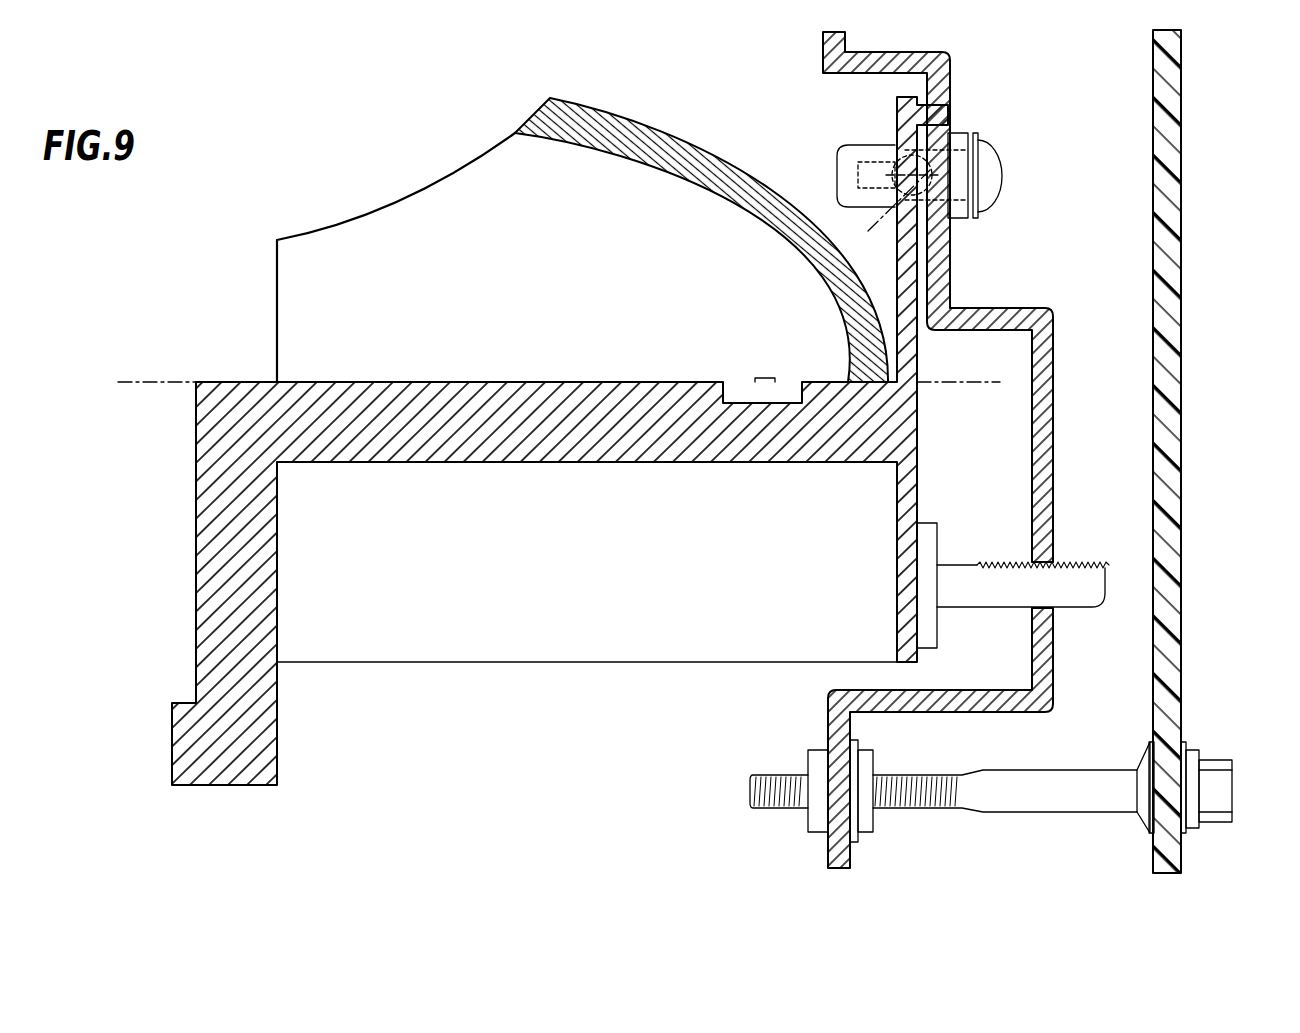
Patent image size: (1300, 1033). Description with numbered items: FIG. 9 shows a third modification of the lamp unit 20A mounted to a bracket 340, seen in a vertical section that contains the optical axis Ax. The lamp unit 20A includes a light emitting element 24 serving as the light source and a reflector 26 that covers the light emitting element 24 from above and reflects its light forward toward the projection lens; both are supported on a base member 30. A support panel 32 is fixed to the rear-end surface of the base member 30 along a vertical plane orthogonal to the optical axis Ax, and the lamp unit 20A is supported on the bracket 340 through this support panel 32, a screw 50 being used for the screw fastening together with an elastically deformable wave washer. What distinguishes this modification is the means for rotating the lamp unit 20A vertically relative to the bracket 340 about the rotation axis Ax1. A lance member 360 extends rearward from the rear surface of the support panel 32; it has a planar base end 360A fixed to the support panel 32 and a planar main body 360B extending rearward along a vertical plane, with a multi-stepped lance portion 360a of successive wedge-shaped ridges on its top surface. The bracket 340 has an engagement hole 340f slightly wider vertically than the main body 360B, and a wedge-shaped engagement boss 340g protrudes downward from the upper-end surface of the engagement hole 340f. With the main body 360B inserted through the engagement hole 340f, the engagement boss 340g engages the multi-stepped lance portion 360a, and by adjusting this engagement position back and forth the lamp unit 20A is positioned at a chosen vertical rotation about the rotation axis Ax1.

The lamp unit 20A is at (325, 125).
The light emitting element 24 is at (748, 375).
The reflector 26 is at (694, 133).
The base member 30 is at (280, 614).
The support panel 32 is at (895, 548).
The screw 50 is at (1007, 152).
The bracket 340 is at (1060, 351).
The engagement hole 340f is at (1047, 607).
The engagement boss 340g is at (1055, 566).
The lance member 360 is at (1101, 619).
The multi-stepped lance portion 360a is at (1013, 565).
The base end 360A is at (930, 627).
The main body 360B is at (1007, 593).
The optical axis Ax is at (183, 382).
The rotation axis Ax1 is at (862, 237).